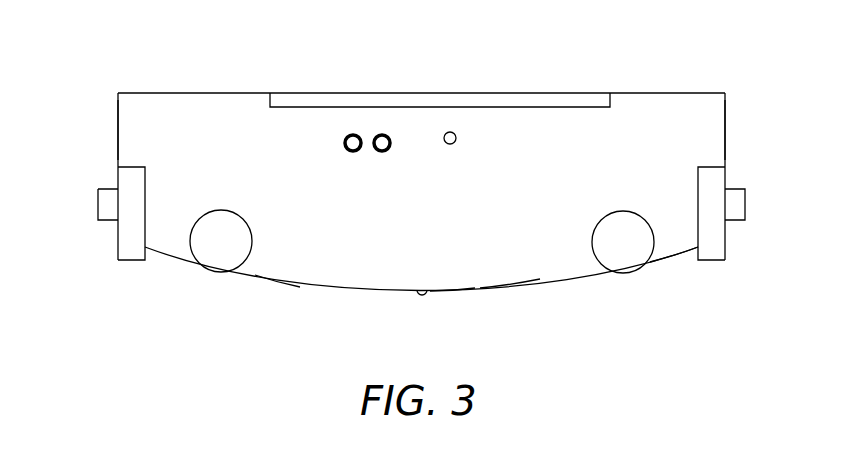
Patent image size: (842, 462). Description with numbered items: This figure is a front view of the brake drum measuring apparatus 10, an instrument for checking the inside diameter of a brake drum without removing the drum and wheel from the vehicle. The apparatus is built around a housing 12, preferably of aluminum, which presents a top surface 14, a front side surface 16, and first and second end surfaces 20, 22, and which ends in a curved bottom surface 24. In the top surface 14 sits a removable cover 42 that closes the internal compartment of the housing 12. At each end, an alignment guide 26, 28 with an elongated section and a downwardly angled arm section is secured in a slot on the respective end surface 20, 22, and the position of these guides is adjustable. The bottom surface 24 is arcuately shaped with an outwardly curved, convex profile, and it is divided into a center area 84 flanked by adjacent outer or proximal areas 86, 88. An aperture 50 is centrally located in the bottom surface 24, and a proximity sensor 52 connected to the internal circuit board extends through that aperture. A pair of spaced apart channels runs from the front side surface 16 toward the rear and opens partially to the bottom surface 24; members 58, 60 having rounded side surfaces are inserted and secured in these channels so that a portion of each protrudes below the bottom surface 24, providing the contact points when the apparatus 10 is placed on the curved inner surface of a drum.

The brake drum measuring apparatus 10 is at (84, 58).
The housing 12 is at (318, 312).
The top surface 14 is at (660, 93).
The front side surface 16 is at (230, 128).
The first end surface 20 is at (118, 128).
The second end surface 22 is at (725, 128).
The bottom surface 24 is at (500, 290).
The alignment guide 26 is at (131, 245).
The alignment guide 28 is at (710, 245).
The removable cover 42 is at (410, 93).
The aperture 50 is at (415, 291).
The proximity sensor 52 is at (429, 291).
The member 58 is at (219, 243).
The member 60 is at (624, 243).
The center area 84 is at (455, 291).
The proximal area 86 is at (271, 282).
The proximal area 88 is at (655, 260).